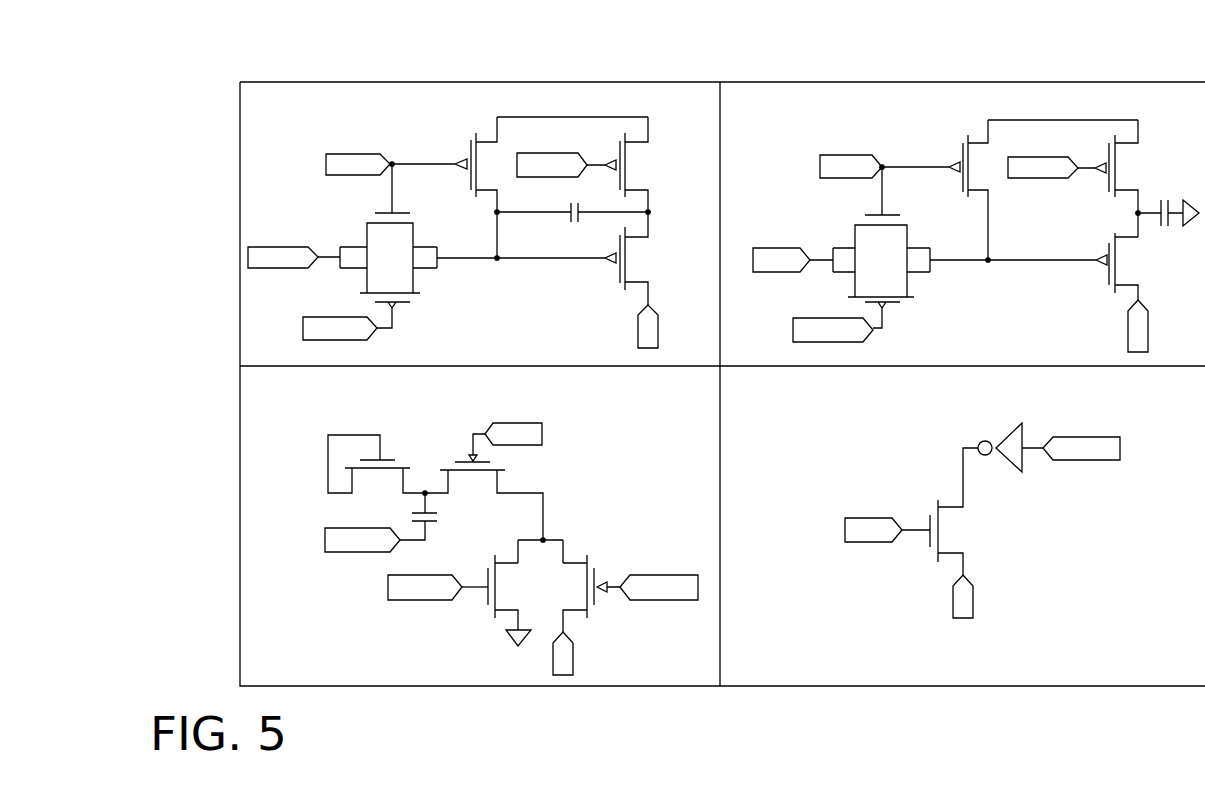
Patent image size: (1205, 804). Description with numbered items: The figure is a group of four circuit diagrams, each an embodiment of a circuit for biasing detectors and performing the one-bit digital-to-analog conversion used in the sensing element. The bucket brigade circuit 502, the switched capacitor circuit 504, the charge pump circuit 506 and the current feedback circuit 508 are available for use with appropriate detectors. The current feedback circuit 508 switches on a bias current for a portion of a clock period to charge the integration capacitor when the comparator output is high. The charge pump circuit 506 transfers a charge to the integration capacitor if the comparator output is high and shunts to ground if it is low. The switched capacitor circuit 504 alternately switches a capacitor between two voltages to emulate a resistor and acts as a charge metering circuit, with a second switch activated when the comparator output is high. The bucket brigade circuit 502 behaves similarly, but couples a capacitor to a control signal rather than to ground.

The bucket brigade circuit 502 is at (483, 105).
The switched capacitor circuit 504 is at (1005, 96).
The charge pump circuit 506 is at (448, 655).
The current feedback circuit 508 is at (1003, 653).